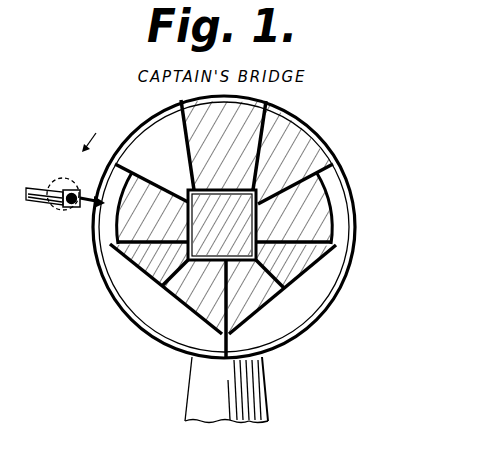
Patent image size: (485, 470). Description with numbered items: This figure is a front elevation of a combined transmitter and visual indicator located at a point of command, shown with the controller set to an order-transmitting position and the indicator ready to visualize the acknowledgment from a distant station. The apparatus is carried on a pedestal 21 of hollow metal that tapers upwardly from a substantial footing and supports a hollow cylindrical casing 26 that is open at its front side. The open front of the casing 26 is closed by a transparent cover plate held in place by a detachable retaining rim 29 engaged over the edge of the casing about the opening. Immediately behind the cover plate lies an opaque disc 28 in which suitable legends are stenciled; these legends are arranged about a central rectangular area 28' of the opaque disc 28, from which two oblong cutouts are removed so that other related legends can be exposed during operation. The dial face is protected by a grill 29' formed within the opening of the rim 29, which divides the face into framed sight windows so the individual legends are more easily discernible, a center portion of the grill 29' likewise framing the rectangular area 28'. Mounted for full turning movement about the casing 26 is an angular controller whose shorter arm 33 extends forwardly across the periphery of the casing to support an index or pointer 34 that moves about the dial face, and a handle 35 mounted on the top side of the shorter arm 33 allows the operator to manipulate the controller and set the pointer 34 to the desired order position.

The pedestal 21 is at (268, 392).
The casing 26 is at (355, 213).
The opaque disc 28 is at (152, 289).
The central rectangular area 28' is at (222, 211).
The retaining rim 29 is at (304, 288).
The grill 29' is at (306, 152).
The shorter arm 33 is at (84, 207).
The index or pointer 34 is at (73, 187).
The handle 35 is at (43, 203).